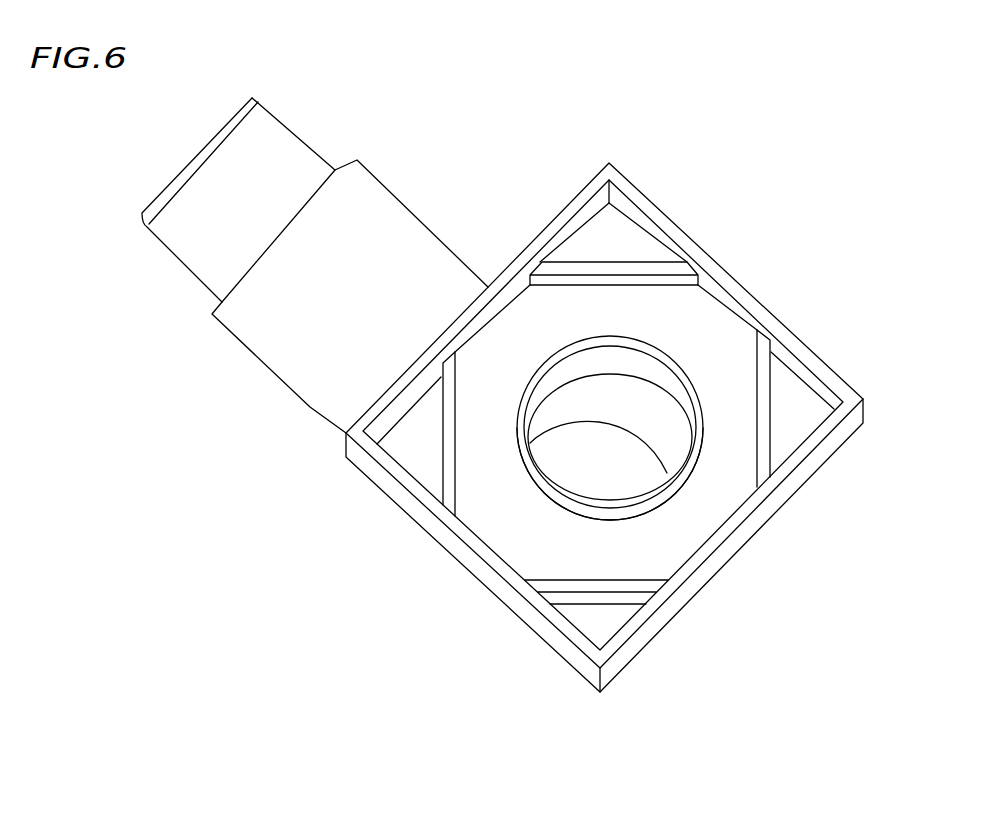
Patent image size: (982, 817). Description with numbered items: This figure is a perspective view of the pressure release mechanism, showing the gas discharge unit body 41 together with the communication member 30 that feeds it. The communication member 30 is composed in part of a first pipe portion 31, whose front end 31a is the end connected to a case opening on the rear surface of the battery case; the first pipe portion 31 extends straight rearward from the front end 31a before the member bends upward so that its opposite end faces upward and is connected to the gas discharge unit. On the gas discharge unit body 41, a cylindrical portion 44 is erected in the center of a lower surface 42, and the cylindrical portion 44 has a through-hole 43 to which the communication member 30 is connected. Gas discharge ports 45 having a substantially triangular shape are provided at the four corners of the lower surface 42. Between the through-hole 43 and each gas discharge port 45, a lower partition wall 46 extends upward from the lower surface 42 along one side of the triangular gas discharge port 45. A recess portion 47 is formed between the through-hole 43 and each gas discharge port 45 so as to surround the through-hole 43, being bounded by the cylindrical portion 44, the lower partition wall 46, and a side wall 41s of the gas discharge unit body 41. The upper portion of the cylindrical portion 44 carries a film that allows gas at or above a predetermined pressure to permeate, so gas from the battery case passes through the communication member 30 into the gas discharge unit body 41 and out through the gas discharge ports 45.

The communication member 30 is at (398, 184).
The first pipe portion 31 is at (225, 338).
The front end 31a is at (190, 238).
The gas discharge unit body 41 is at (654, 196).
The side wall 41s is at (793, 330).
The lower surface 42 is at (705, 332).
The through-hole 43 is at (628, 370).
The cylindrical portion 44 is at (702, 463).
The gas discharge port 45 is at (603, 242).
The lower partition wall 46 is at (647, 268).
The recess portion 47 is at (512, 503).